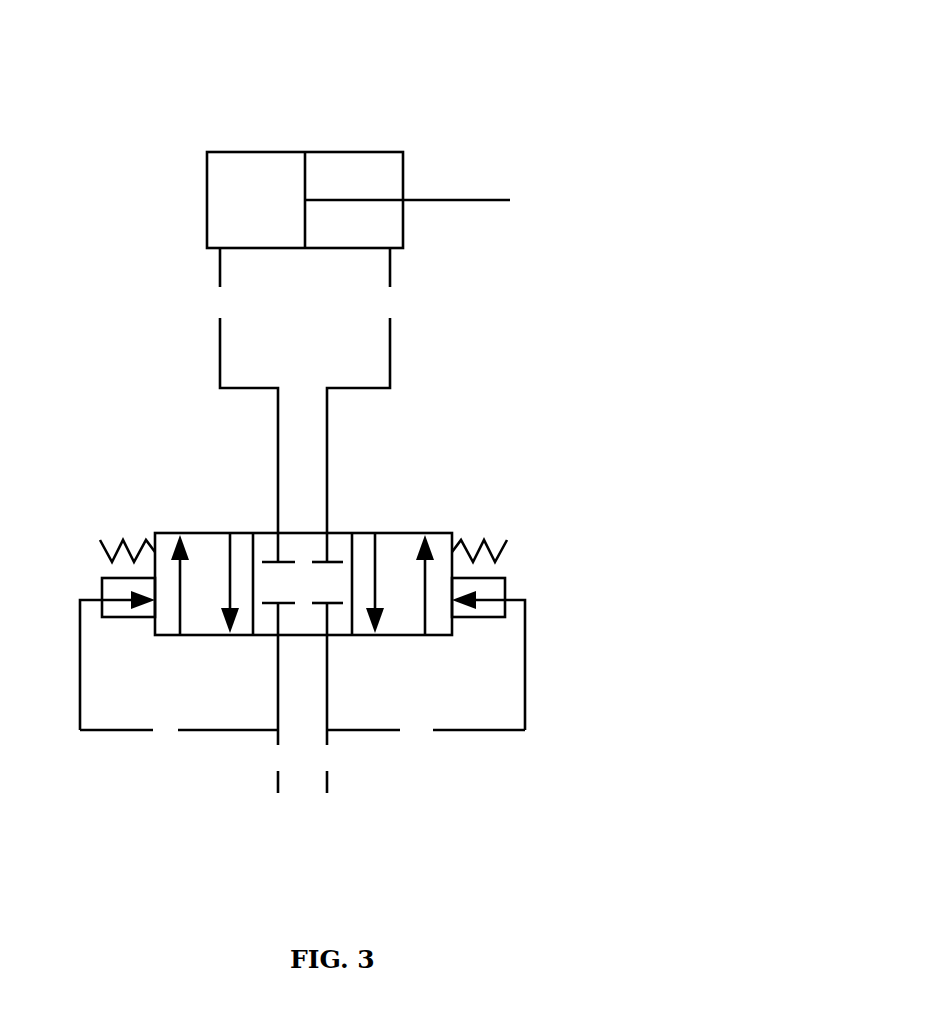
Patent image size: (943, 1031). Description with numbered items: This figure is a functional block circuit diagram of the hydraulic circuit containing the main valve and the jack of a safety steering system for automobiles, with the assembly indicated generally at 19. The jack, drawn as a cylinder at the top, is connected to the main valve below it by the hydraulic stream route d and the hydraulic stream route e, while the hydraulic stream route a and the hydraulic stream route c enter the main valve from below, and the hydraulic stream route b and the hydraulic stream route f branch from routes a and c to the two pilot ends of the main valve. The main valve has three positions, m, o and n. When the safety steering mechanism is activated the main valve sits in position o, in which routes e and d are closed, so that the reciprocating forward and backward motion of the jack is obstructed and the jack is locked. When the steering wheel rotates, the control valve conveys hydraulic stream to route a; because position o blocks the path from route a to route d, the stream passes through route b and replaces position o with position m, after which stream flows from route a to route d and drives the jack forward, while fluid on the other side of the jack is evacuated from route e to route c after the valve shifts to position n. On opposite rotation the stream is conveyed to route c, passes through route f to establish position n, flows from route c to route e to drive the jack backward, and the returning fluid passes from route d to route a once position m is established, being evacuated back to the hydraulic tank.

The hydraulic cylinder actuator 19 is at (514, 121).
The hydraulic stream route a is at (276, 714).
The hydraulic stream route b is at (179, 669).
The hydraulic stream route c is at (325, 714).
The hydraulic stream route d is at (244, 390).
The hydraulic stream route e is at (363, 390).
The hydraulic stream route f is at (426, 669).
The main valve position m is at (205, 584).
The main valve position n is at (400, 584).
The main valve position o is at (302, 584).